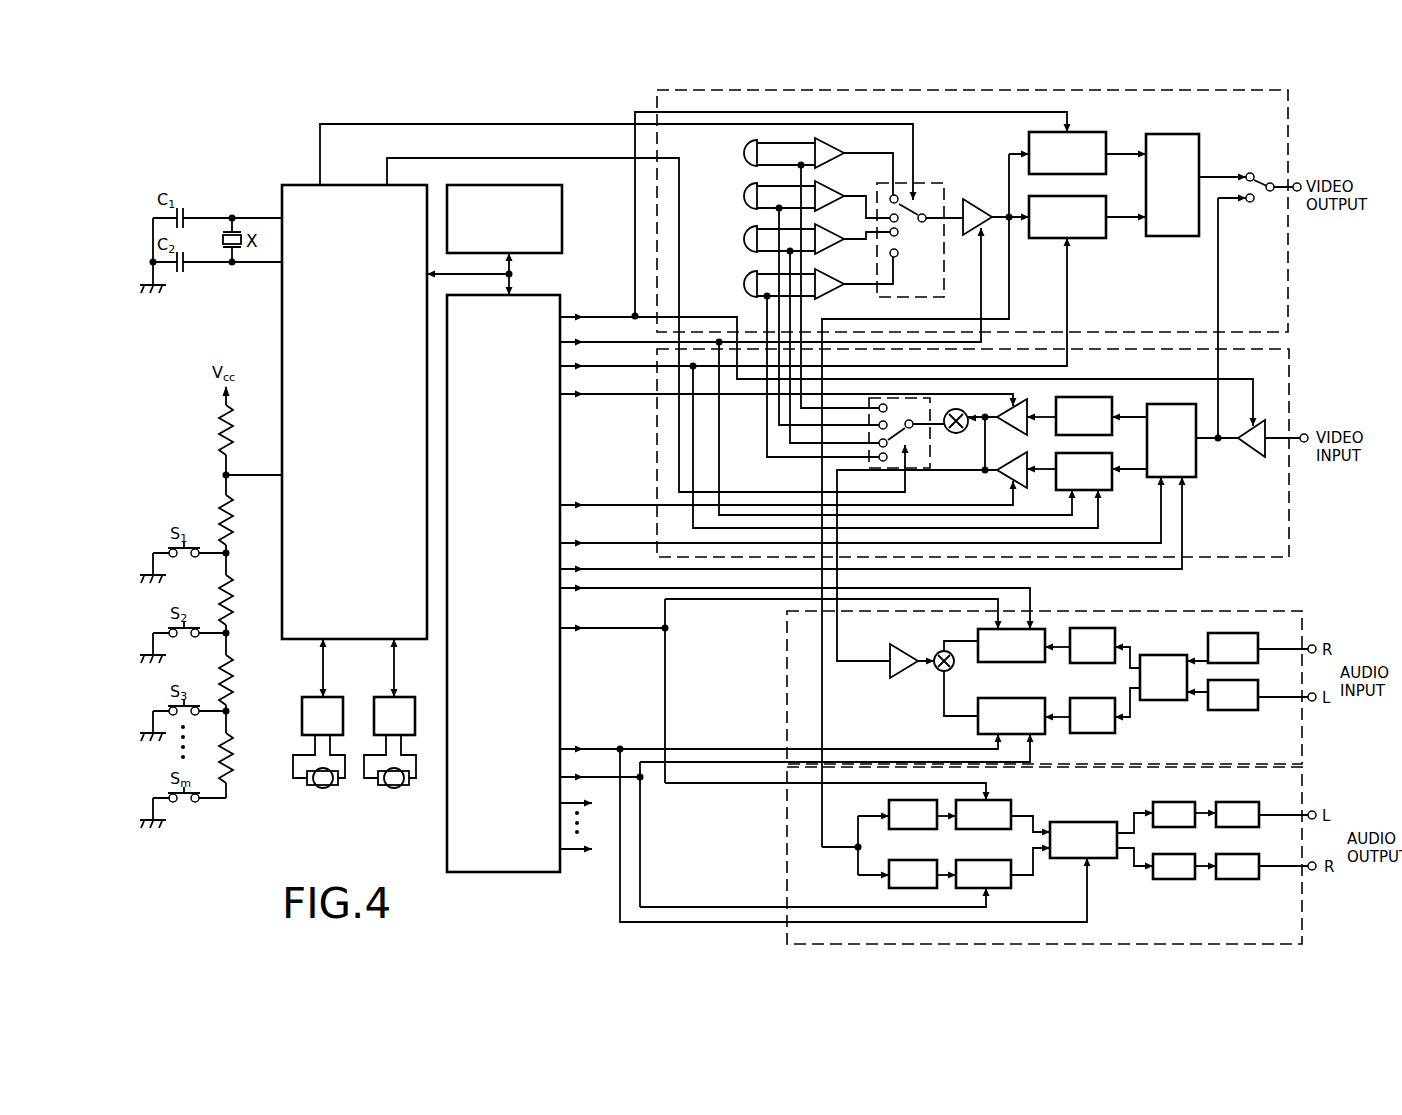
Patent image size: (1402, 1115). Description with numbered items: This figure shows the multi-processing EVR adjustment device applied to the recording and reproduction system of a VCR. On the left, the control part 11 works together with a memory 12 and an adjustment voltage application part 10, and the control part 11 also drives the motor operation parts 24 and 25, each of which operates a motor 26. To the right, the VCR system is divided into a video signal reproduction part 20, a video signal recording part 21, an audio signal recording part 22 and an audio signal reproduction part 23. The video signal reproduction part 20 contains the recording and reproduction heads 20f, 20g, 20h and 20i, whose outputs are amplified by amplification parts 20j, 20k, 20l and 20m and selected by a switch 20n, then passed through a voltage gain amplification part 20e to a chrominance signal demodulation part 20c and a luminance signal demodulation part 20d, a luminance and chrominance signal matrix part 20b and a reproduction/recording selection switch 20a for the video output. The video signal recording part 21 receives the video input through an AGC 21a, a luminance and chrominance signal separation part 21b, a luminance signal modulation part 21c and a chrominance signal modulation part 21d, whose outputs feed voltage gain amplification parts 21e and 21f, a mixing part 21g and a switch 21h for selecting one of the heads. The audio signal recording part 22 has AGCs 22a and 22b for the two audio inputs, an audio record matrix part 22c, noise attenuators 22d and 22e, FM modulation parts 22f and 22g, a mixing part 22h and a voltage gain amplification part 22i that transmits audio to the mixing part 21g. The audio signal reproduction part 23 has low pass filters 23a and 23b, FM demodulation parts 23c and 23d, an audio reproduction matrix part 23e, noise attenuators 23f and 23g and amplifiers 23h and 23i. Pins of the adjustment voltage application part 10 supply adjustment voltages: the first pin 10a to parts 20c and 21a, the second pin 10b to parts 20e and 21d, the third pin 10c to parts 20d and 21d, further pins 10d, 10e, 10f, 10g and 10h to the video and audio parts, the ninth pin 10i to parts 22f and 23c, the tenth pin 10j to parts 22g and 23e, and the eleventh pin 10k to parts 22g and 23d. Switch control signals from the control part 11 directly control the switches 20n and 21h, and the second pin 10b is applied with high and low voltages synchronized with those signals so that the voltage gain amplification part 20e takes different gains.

The adjustment voltage application part 10 is at (550, 296).
The first pin 10a is at (889, 366).
The second pin 10b is at (799, 371).
The third pin 10c is at (812, 383).
The adjustment voltage output terminal 10d is at (769, 394).
The adjustment voltage output terminal 10e is at (769, 498).
The adjustment voltage output terminal 10f is at (846, 515).
The adjustment voltage output terminal 10g is at (854, 528).
The adjustment voltage output terminal 10h is at (778, 603).
The ninth pin 10i is at (764, 699).
The tenth pin 10j is at (809, 828).
The eleventh pin 10k is at (778, 820).
The control part 11 is at (310, 216).
The memory 12 is at (551, 212).
The video signal reproduction part 20 is at (698, 95).
The reproduction/recording selection switch 20a is at (1258, 180).
The luminance and chrominance signal matrix part 20b is at (1172, 143).
The chrominance signal demodulation part 20c is at (1085, 143).
The luminance signal demodulation part 20d is at (1086, 240).
The voltage gain amplification part 20e is at (975, 206).
The recording and reproduction head 20f is at (738, 152).
The recording and reproduction head 20g is at (738, 196).
The recording and reproduction head 20h is at (738, 239).
The recording and reproduction head 20i is at (738, 284).
The amplification part 20j is at (829, 150).
The amplification part 20k is at (831, 193).
The amplification part 20l is at (828, 246).
The amplification part 20m is at (838, 290).
The switch 20n is at (927, 194).
The video signal recording part 21 is at (658, 431).
The AGC 21a is at (1255, 456).
The luminance and chrominance signal separation part 21b is at (1190, 478).
The luminance signal modulation part 21c is at (1112, 403).
The chrominance signal modulation part 21d is at (1111, 487).
The voltage gain amplification part 21e is at (1012, 434).
The voltage gain amplification part 21f is at (1003, 477).
The mixing part 21g is at (1004, 417).
The switch 21h is at (918, 469).
The audio signal recording part 22 is at (787, 676).
The AGC 22a is at (1258, 651).
The AGC 22b is at (1250, 711).
The audio record matrix part 22c is at (1154, 658).
The noise attenuator 22d is at (1075, 662).
The noise attenuator 22e is at (1115, 729).
The FM modulation part 22f is at (1000, 663).
The FM modulation part 22g is at (978, 727).
The mixing part 22h is at (942, 652).
The voltage gain amplification part 22i is at (894, 675).
The audio signal reproduction part 23 is at (787, 848).
The low pass filter 23a is at (901, 829).
The low pass filter 23b is at (889, 881).
The FM demodulation part 23c is at (1011, 804).
The FM demodulation part 23d is at (1011, 882).
The audio reproduction matrix part 23e is at (1085, 822).
The noise attenuator 23f is at (1170, 802).
The noise attenuator 23g is at (1170, 880).
The amplifier 23h is at (1243, 802).
The amplifier 23i is at (1244, 880).
The motor operation part 24 is at (303, 708).
The motor operation part 25 is at (418, 705).
The motor 26 is at (323, 788).